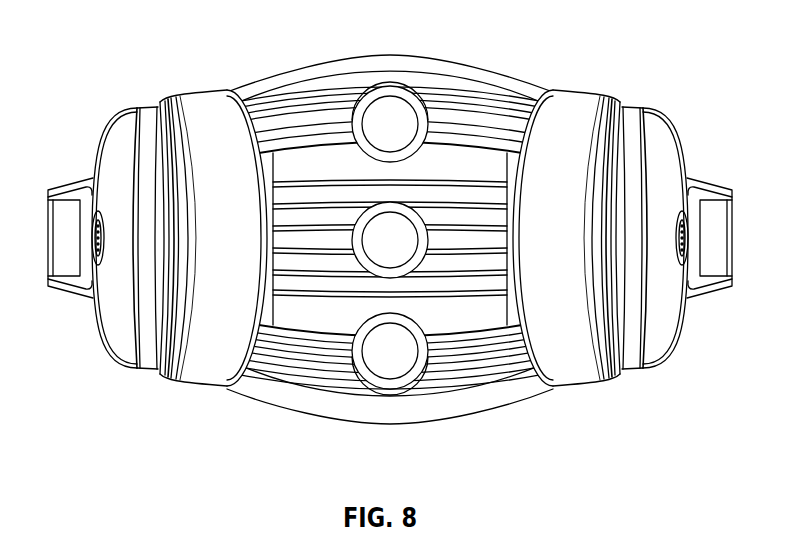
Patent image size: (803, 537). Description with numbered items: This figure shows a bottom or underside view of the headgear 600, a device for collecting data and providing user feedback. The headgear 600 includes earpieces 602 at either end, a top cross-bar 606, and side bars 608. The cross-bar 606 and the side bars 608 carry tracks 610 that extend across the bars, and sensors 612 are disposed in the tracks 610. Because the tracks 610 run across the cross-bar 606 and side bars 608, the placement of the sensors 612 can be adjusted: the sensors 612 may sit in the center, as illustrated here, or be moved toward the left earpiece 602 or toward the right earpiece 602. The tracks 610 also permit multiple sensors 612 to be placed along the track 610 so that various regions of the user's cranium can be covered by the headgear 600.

The head gear device 600 is at (141, 74).
The earpieces 602 is at (117, 323).
The top cross-bar 606 is at (317, 165).
The side-bars 608 is at (497, 72).
The track 610 is at (288, 376).
The sensors 612 is at (416, 393).